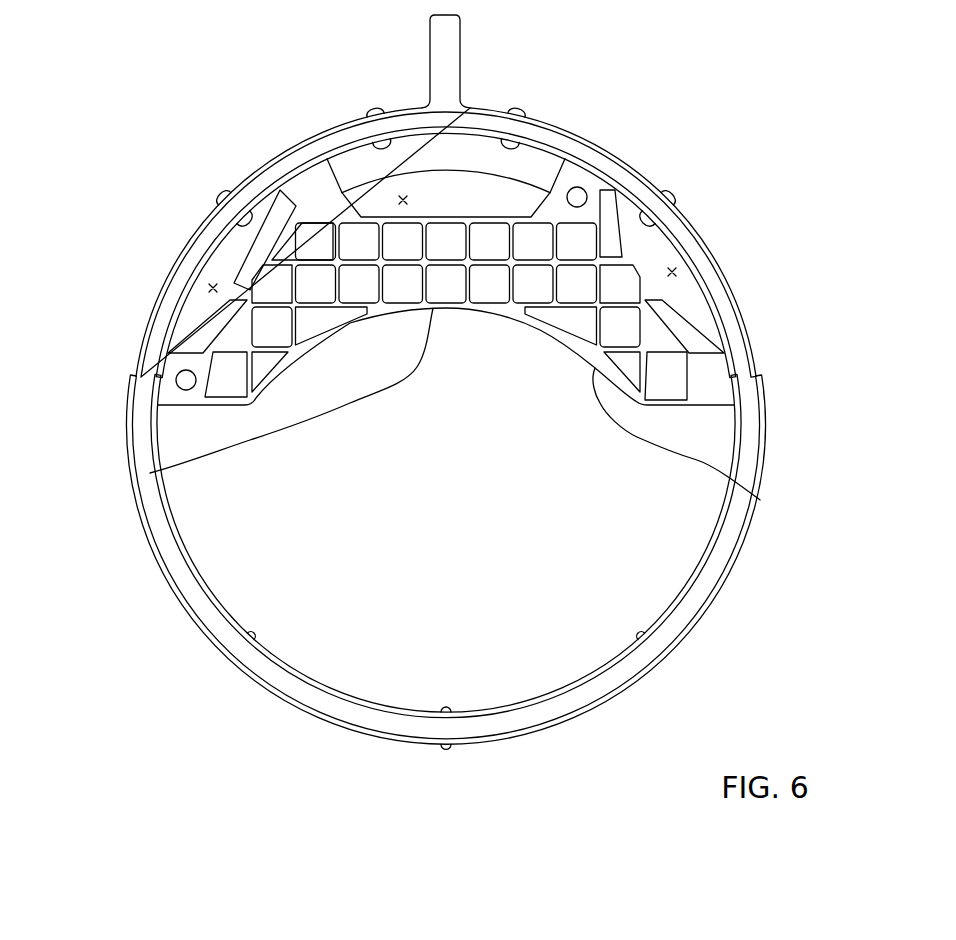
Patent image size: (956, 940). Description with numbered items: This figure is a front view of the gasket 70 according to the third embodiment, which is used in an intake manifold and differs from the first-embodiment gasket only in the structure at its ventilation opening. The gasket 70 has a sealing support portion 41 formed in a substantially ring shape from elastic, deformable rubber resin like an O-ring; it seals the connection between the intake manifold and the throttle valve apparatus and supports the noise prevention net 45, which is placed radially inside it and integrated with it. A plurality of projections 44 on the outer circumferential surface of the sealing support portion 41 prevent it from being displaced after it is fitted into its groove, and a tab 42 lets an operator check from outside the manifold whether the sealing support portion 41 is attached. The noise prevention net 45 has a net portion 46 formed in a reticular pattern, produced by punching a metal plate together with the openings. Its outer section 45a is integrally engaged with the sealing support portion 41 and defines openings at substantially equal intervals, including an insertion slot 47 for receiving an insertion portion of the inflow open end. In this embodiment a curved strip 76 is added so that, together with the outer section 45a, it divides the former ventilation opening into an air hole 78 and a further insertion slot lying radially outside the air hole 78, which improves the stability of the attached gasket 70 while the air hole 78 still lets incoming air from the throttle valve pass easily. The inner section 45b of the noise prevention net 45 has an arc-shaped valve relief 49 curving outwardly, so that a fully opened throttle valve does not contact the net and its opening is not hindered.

The gasket 70 is at (613, 56).
The sealing support portion 41 is at (719, 285).
The tab 42 is at (447, 33).
The projections 44 is at (376, 110).
The noise prevention net 45 is at (625, 325).
The outer section 45a is at (590, 167).
The inner section 45b is at (760, 500).
The net portion 46 is at (555, 288).
The insertion slot 47 is at (672, 272).
The valve relief 49 is at (150, 473).
The curved strip 76 is at (470, 172).
The air hole 78 is at (403, 200).